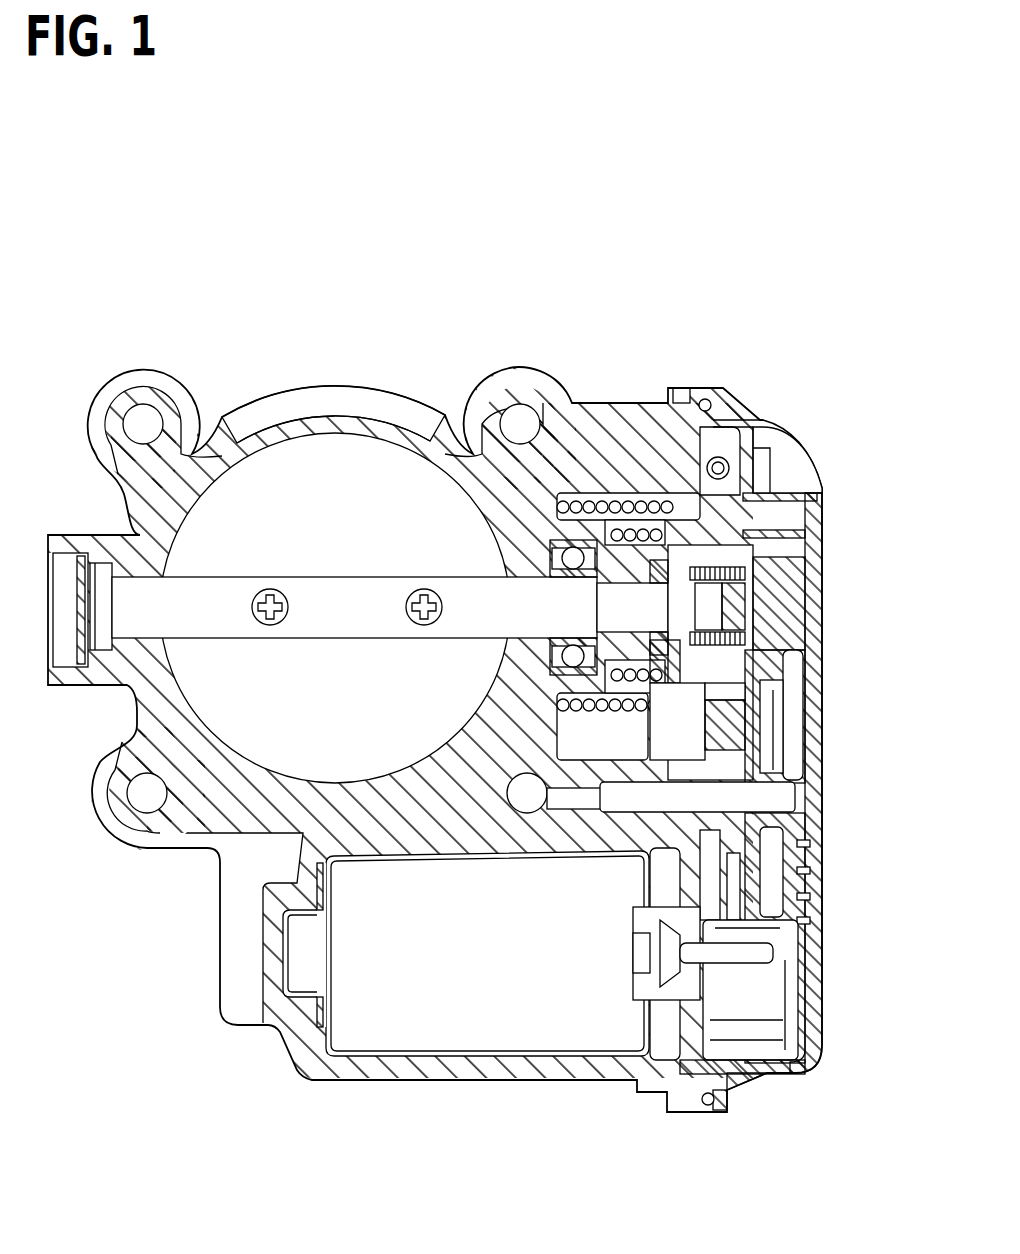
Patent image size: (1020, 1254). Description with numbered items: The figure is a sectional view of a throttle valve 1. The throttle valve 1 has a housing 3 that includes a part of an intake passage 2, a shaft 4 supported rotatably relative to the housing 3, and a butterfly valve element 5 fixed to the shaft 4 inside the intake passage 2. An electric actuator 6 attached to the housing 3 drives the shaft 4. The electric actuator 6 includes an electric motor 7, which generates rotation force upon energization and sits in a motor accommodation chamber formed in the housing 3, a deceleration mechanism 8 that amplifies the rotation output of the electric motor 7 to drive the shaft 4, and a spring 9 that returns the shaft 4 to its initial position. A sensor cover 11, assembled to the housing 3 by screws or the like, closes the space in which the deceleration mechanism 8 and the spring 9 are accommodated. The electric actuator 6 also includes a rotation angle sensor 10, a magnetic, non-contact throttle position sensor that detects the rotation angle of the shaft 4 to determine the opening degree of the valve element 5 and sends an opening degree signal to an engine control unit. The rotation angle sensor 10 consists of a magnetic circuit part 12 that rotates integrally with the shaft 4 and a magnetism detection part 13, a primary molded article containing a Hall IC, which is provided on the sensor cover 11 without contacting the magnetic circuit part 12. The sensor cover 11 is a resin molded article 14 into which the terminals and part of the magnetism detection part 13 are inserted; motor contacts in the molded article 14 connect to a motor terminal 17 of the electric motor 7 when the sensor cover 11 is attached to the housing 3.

The throttle valve 1 is at (228, 360).
The intake passage 2 is at (299, 442).
The housing 3 is at (347, 432).
The shaft 4 is at (345, 598).
The butterfly valve element 5 is at (401, 470).
The electric actuator 6 is at (780, 1095).
The electric motor 7 is at (525, 1018).
The deceleration mechanism 8 is at (785, 875).
The spring 9 is at (625, 503).
The rotation angle sensor 10 is at (870, 462).
The sensor cover 11 is at (833, 638).
The magnetic circuit part 12 is at (725, 532).
The magnetism detection part 13 is at (790, 560).
The molded article 14 is at (810, 728).
The motor terminal 17 is at (720, 955).